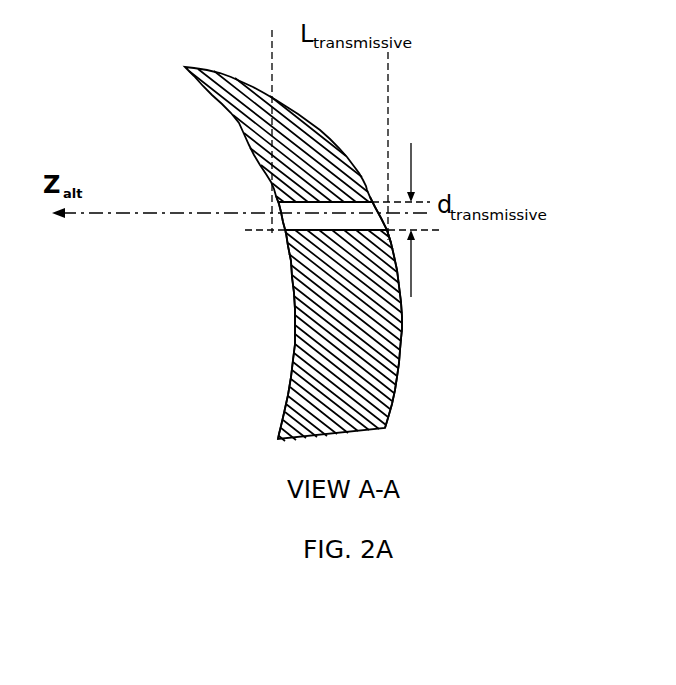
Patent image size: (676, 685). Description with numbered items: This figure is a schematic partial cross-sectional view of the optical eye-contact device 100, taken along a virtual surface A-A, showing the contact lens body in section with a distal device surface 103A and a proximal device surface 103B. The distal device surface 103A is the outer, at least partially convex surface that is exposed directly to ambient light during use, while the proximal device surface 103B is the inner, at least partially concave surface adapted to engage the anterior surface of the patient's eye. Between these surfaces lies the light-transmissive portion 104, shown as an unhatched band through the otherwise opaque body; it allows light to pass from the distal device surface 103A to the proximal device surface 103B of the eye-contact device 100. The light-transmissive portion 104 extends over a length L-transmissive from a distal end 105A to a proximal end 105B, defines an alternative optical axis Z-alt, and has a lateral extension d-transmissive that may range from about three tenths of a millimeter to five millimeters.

The optical eye-contact device 100 is at (193, 184).
The distal device surface 103A is at (398, 397).
The proximal device surface 103B is at (287, 402).
The light-transmissive portion 104 is at (337, 205).
The distal end 105A is at (397, 232).
The proximal end 105B is at (278, 203).